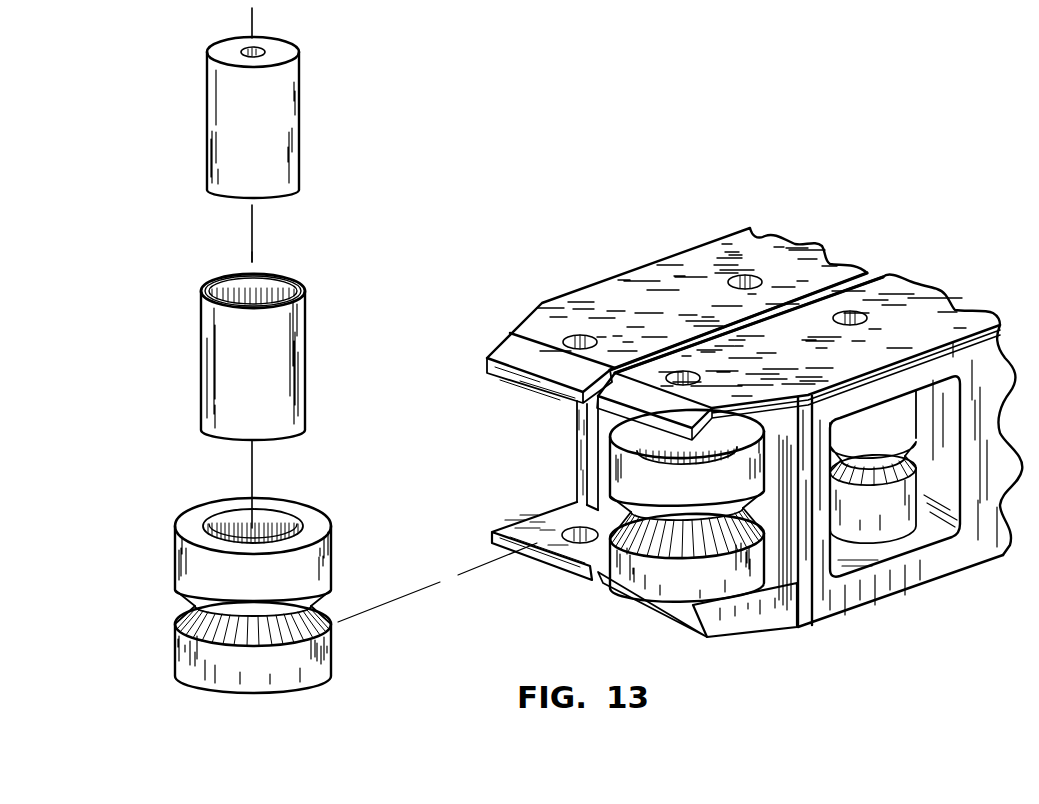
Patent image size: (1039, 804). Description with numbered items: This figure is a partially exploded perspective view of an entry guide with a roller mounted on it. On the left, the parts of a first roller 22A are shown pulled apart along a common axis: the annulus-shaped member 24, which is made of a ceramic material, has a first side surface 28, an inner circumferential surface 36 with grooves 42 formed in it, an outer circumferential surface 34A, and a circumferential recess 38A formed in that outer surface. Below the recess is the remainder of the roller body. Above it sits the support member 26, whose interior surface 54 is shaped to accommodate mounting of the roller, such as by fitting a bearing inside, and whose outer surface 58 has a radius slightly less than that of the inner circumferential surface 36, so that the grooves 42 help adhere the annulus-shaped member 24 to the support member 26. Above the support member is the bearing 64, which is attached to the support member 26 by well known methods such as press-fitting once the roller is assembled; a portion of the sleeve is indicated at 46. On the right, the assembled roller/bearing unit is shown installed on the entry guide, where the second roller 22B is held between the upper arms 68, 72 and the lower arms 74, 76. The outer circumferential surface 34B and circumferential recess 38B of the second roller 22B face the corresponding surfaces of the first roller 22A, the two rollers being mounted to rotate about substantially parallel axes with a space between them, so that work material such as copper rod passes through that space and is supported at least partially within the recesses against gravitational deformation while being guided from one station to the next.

The bearing 64 is at (265, 102).
The bore of sleeve 46 is at (226, 290).
The interior surface of the support member 54 is at (283, 290).
The support member 26 is at (300, 325).
The outer surface of the support member 58 is at (238, 367).
The annulus-shaped member 24 is at (304, 540).
The inner circumferential surface 36 is at (268, 506).
The grooves 42 is at (292, 520).
The outer circumferential surface of the first roller 34A is at (286, 531).
The circumferential recess of the first roller 38A is at (322, 612).
The first side surface 28 is at (211, 506).
The first roller 22A is at (165, 688).
The upper arm 68 is at (738, 263).
The upper arm 72 is at (790, 330).
The lower arm 74 is at (560, 517).
The second roller 22B is at (672, 555).
The outer circumferential surface of the second roller 34B is at (680, 565).
The circumferential recess of the second roller 38B is at (687, 540).
The lower arm 76 is at (777, 613).